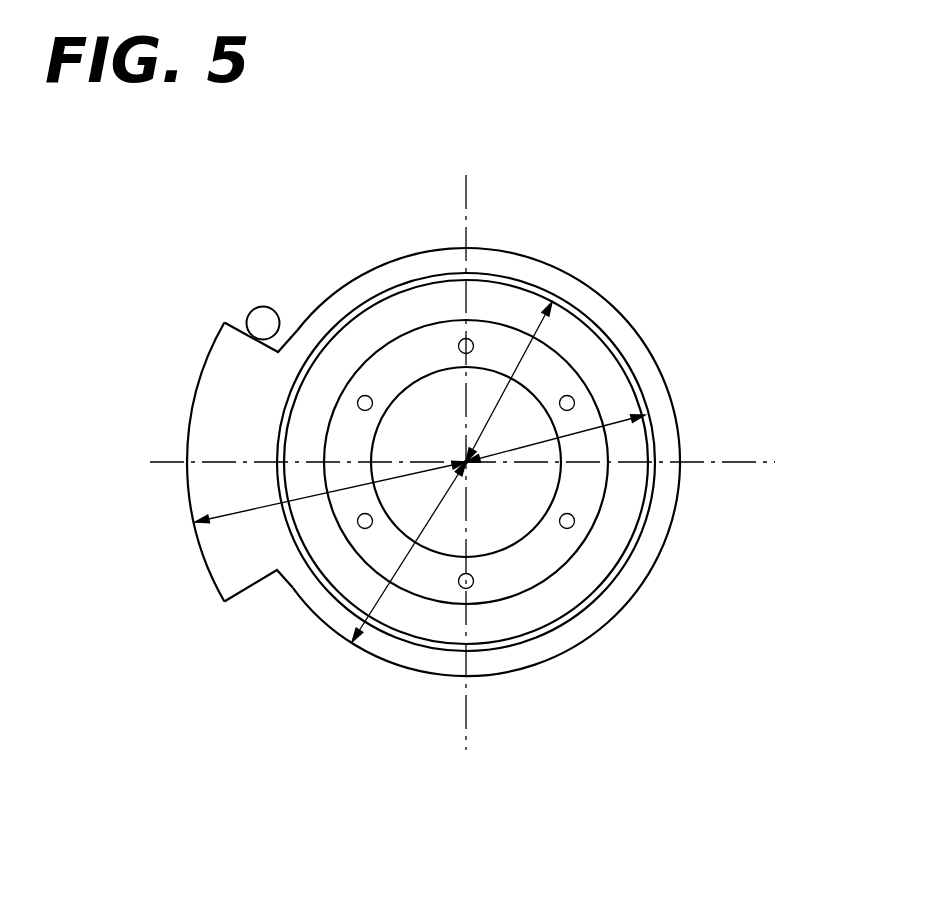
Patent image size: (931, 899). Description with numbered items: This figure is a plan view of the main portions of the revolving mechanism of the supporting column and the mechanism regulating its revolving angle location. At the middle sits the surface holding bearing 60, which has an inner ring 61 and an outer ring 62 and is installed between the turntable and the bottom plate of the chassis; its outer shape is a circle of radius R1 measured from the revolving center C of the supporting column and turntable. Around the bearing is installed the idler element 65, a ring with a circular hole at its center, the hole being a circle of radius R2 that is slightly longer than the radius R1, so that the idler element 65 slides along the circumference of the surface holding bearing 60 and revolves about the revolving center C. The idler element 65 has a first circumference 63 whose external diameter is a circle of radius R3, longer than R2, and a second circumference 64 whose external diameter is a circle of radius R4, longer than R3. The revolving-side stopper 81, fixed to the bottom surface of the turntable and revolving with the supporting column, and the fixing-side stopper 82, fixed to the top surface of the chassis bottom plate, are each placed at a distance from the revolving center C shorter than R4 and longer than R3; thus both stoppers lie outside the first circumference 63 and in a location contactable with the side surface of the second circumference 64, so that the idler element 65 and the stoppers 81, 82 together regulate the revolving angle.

The surface holding bearing 60 is at (774, 494).
The inner ring 61 is at (585, 493).
The outer ring 62 is at (615, 540).
The first circumference 63 is at (317, 598).
The second circumference 64 is at (247, 568).
The idler element 65 is at (280, 708).
The revolving-side stopper 81 is at (265, 322).
The fixing-side stopper 82 is at (263, 323).
The revolving center C is at (466, 462).
The radius R1 is at (523, 358).
The radius R2 is at (614, 418).
The radius R3 is at (383, 600).
The radius R4 is at (243, 515).